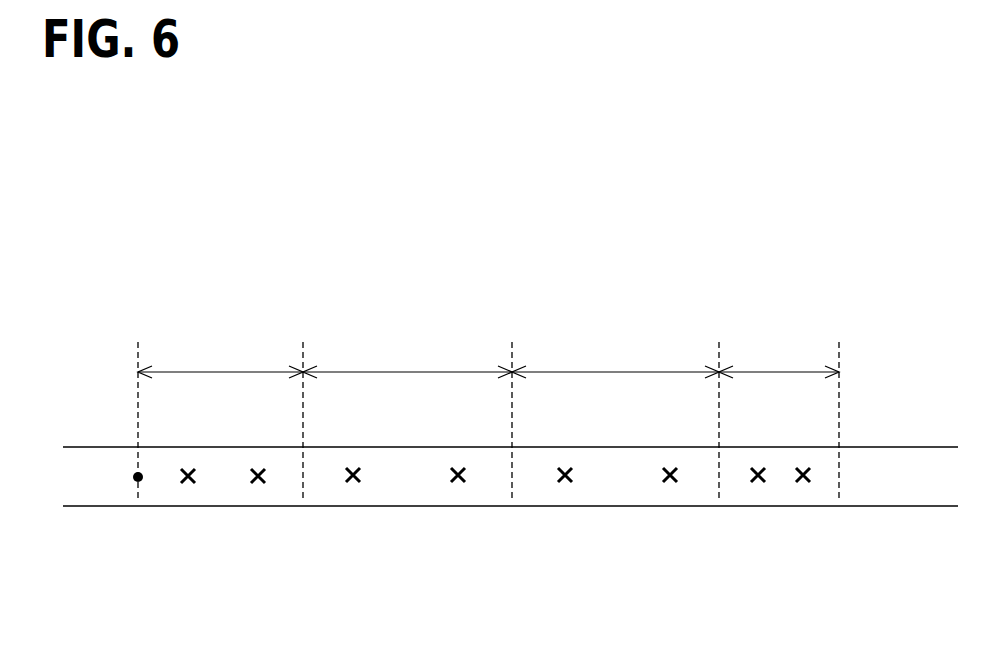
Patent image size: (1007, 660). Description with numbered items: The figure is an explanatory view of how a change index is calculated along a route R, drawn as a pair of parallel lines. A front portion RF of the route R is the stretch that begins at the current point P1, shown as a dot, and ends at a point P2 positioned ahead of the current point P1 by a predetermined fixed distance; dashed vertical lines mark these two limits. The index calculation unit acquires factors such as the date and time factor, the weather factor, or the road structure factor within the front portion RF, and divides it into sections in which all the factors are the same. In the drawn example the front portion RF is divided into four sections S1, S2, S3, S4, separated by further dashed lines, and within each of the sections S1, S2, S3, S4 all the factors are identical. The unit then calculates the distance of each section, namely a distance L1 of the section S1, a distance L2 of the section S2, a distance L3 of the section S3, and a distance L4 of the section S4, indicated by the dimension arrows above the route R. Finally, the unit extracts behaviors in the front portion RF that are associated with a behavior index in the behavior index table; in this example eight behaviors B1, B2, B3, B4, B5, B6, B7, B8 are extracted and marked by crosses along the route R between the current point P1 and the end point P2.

The route R is at (913, 447).
The front portion RF is at (617, 506).
The current point P1 is at (134, 481).
The end point P2 is at (839, 469).
The section S1 is at (198, 447).
The section S2 is at (397, 447).
The section S3 is at (602, 447).
The section S4 is at (743, 447).
The distance of the section L1 is at (220, 356).
The distance of the section L2 is at (407, 356).
The distance of the section L3 is at (615, 356).
The distance of the section L4 is at (779, 356).
The behavior B1 is at (188, 482).
The behavior B2 is at (258, 482).
The behavior B3 is at (353, 481).
The behavior B4 is at (458, 481).
The behavior B5 is at (565, 481).
The behavior B6 is at (670, 481).
The behavior B7 is at (758, 481).
The behavior B8 is at (803, 481).